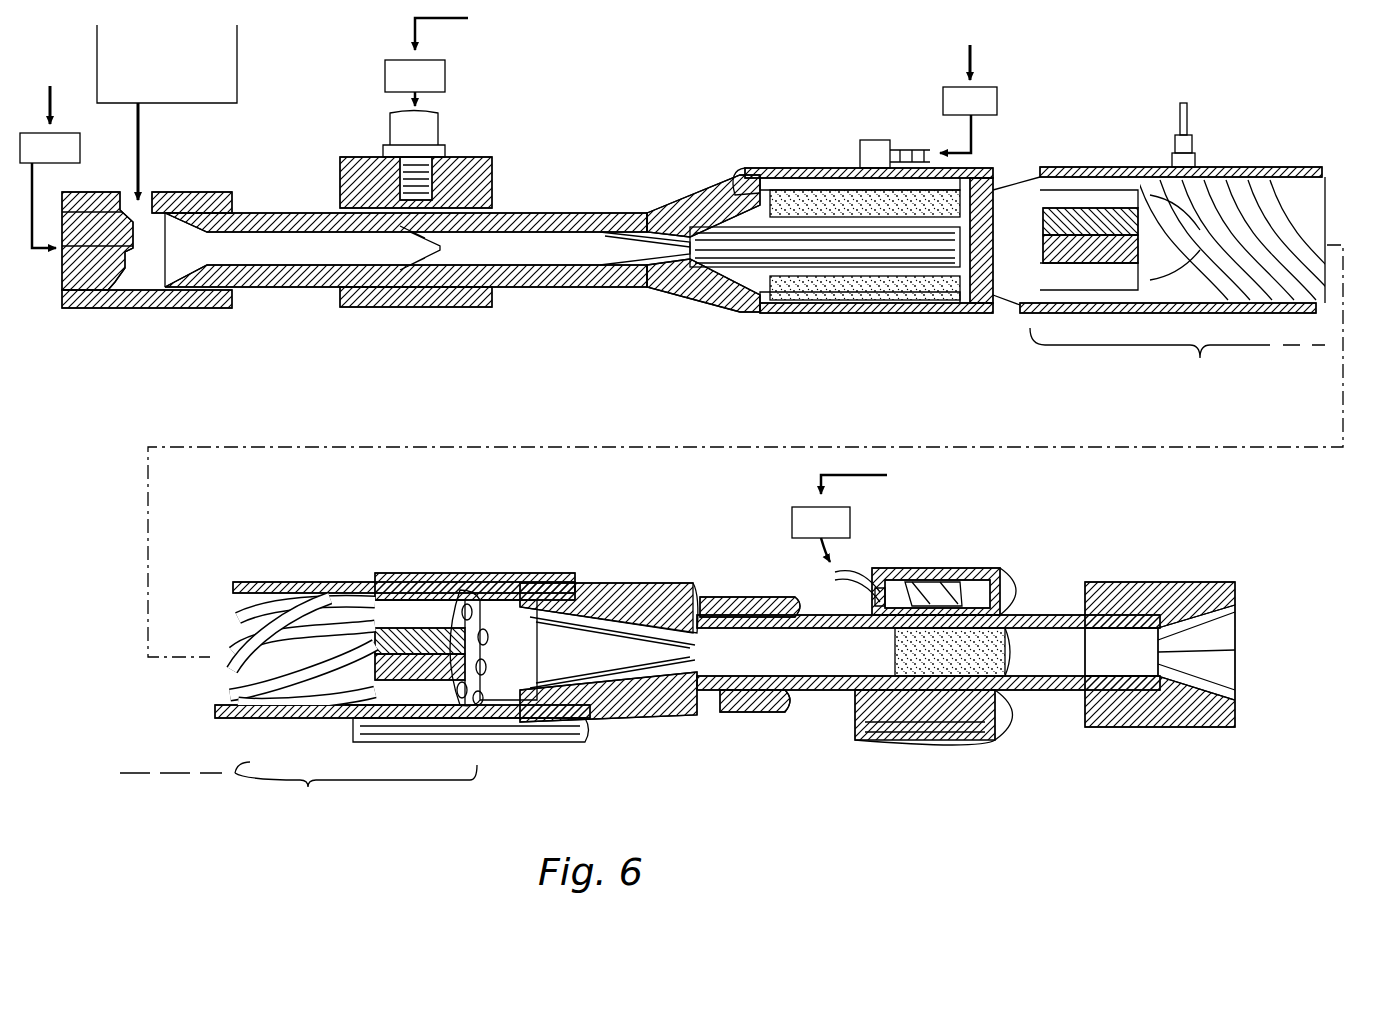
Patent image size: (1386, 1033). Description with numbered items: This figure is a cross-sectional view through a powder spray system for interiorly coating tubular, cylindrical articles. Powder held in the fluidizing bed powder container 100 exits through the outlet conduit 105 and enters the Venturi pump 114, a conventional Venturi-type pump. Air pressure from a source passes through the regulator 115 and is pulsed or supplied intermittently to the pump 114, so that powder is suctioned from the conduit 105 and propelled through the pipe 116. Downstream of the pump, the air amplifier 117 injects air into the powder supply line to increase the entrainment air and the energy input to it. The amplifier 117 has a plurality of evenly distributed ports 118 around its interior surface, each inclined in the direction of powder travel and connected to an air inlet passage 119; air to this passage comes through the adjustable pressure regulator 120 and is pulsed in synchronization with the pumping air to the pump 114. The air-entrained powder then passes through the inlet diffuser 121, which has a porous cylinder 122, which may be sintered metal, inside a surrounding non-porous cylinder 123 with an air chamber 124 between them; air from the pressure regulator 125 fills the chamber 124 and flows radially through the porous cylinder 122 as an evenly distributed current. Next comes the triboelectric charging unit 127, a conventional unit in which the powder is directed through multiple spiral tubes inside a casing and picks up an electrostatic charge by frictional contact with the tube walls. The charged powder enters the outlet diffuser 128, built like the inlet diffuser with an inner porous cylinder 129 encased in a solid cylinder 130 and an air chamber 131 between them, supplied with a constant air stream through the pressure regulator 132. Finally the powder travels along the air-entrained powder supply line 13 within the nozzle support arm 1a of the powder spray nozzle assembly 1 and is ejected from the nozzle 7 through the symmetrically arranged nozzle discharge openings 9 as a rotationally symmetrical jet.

The fluidizing bed powder container 100 is at (238, 42).
The outlet conduit 105 is at (140, 147).
The Venturi pump 114 is at (222, 308).
The regulator 115 is at (82, 135).
The pipe 116 is at (280, 213).
The air amplifier 117 is at (485, 308).
The ports 118 is at (420, 248).
The air inlet passage 119 is at (430, 195).
The adjustable pressure regulator 120 is at (447, 70).
The inlet diffuser 121 is at (760, 315).
The porous cylinder 122 is at (835, 282).
The non-porous cylinder 123 is at (770, 168).
The air chamber 124 is at (815, 185).
The pressure regulator 125 is at (1000, 97).
The triboelectric charging unit 127 is at (1287, 167).
The outlet diffuser 128 is at (875, 740).
The inner porous cylinder 129 is at (1000, 600).
The solid cylinder 130 is at (935, 568).
The air chamber 131 is at (975, 608).
The pressure regulator 132 is at (790, 520).
The powder spray nozzle assembly 1 is at (1202, 649).
The nozzle support arm 1a is at (1068, 612).
The nozzle 7 is at (1218, 722).
The nozzle discharge openings 9 is at (1239, 642).
The air-entrained powder supply line 13 is at (1082, 668).